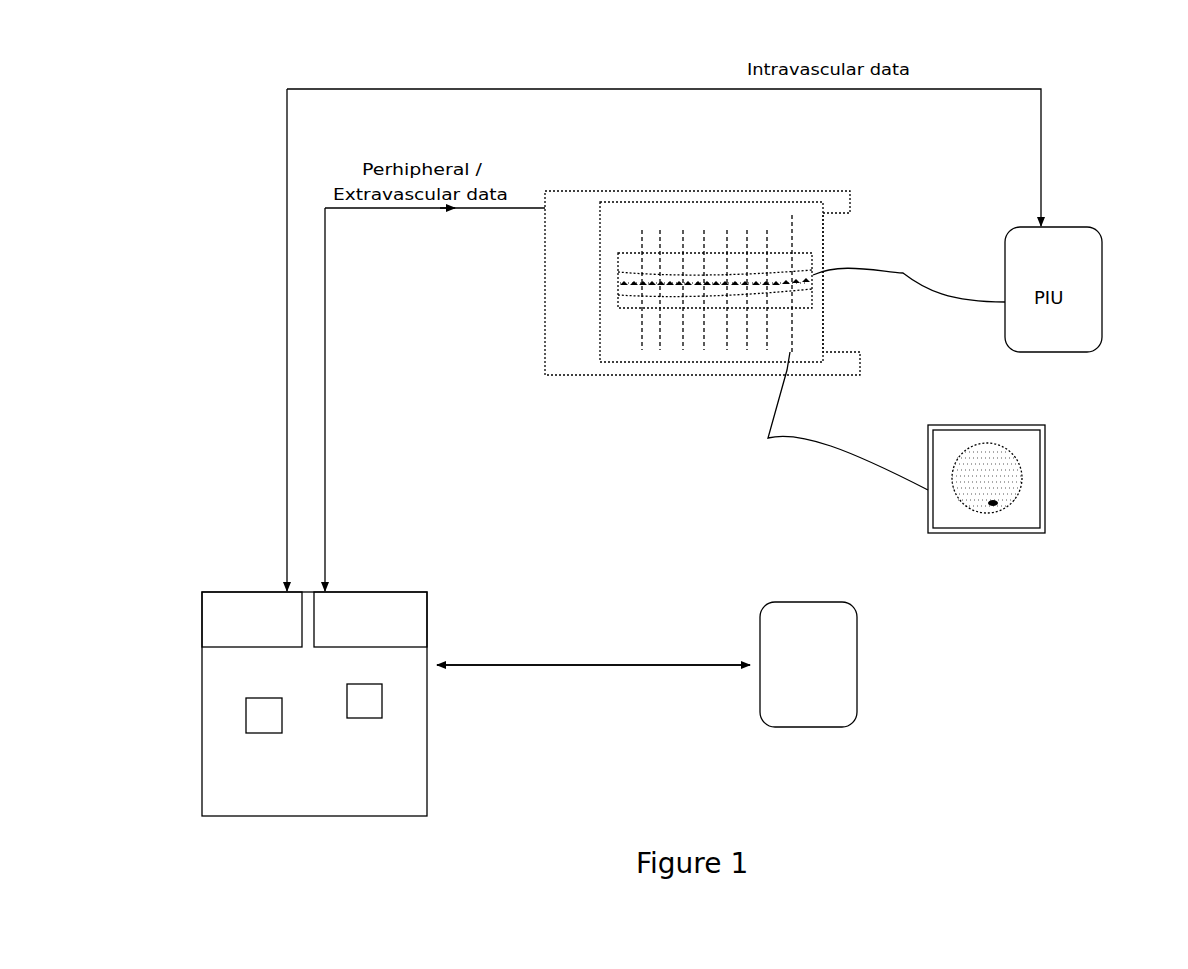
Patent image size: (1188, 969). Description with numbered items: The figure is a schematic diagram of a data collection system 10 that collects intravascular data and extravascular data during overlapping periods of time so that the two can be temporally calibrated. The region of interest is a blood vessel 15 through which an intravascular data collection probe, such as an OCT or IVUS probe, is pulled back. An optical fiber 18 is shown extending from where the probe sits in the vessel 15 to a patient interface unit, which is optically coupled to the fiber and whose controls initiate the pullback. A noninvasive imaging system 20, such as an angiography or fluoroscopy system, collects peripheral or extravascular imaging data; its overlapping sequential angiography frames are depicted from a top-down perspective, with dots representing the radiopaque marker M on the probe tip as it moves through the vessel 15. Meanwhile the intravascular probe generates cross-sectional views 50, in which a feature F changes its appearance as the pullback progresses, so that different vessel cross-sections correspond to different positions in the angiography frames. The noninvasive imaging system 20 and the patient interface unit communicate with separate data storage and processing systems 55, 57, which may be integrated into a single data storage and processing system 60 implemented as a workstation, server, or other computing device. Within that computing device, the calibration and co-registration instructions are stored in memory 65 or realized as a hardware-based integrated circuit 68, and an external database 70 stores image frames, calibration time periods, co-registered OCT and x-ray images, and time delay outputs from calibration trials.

The data collection system 10 is at (622, 51).
The noninvasive imaging system 20 is at (564, 191).
The marker M is at (699, 281).
The cross-sectional views 50 is at (793, 215).
The blood vessel 15 is at (812, 262).
The optical fiber 18 is at (903, 273).
The feature F is at (996, 504).
The data storage and processing system 55 is at (217, 592).
The data storage and processing system 57 is at (417, 600).
The data storage and processing system 60 is at (240, 816).
The memory 65 is at (352, 718).
The hardware-based integrated circuit 68 is at (250, 733).
The external database 70 is at (830, 727).